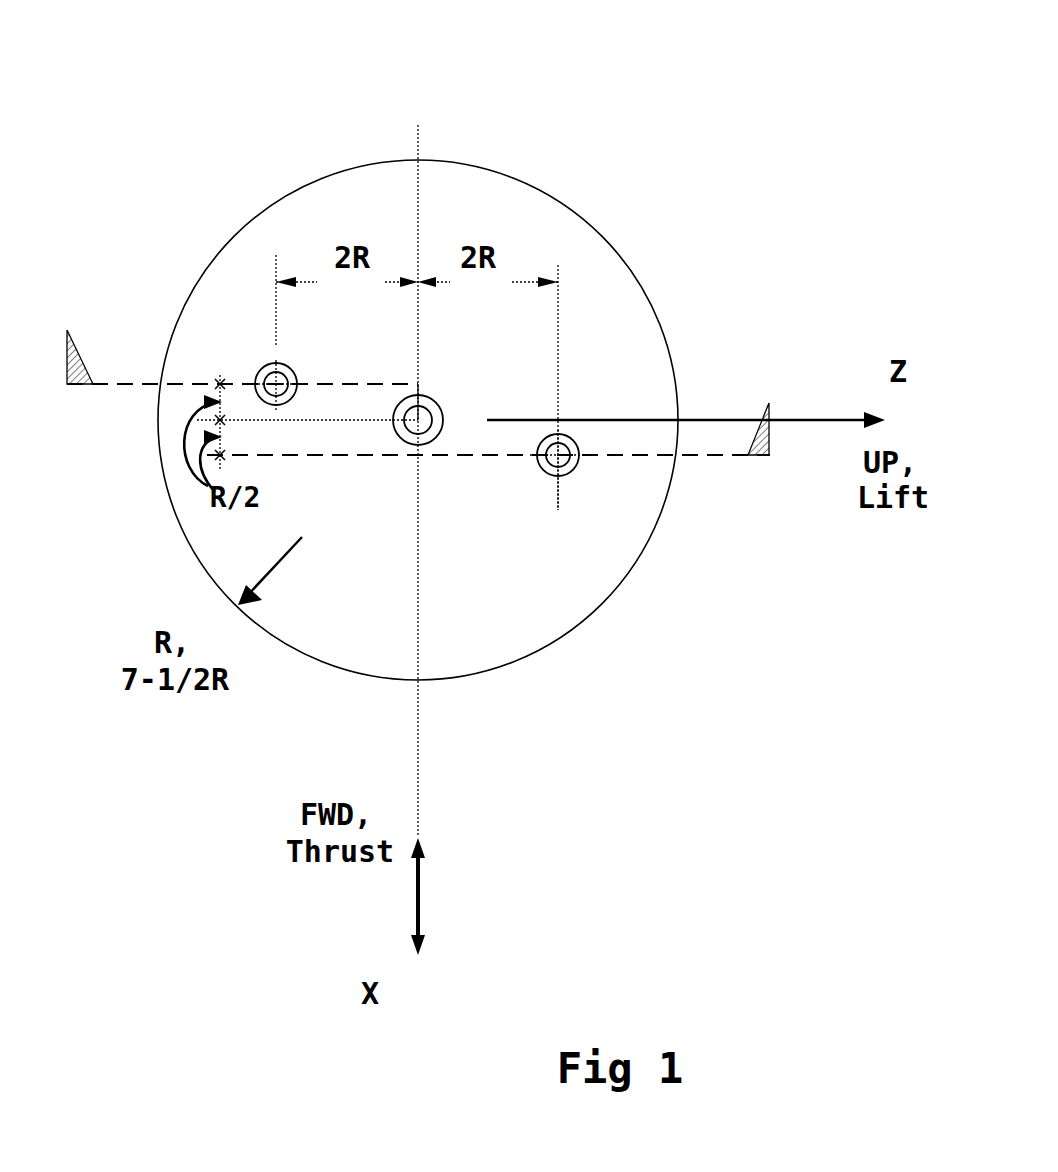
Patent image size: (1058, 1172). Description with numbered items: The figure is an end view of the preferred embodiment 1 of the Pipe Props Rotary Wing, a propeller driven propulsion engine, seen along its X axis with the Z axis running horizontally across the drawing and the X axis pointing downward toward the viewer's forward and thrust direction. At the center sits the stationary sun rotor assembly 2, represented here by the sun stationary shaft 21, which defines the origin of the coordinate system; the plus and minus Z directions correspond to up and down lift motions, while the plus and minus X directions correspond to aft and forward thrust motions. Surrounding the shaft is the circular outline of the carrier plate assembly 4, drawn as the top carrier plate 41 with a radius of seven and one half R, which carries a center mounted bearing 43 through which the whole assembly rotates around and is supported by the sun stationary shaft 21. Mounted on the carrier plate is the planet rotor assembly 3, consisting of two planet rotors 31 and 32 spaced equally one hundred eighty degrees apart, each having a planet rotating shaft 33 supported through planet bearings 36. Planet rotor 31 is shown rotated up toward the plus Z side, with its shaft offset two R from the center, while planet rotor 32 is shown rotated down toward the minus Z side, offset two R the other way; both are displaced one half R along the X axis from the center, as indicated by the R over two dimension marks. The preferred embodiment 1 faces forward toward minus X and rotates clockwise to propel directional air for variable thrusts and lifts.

The preferred embodiment 1 is at (838, 93).
The sun rotor assembly 2 is at (842, 165).
The planet rotor assembly 3 is at (842, 165).
The carrier plate assembly 4 is at (891, 125).
The sun stationary shaft 21 is at (492, 589).
The planet rotor 31 is at (558, 455).
The planet rotor 32 is at (274, 386).
The planet rotating shaft 33 is at (393, 414).
The planet bearing 36 is at (393, 430).
The top carrier plate 41 is at (568, 208).
The center mounted bearing 43 is at (418, 420).